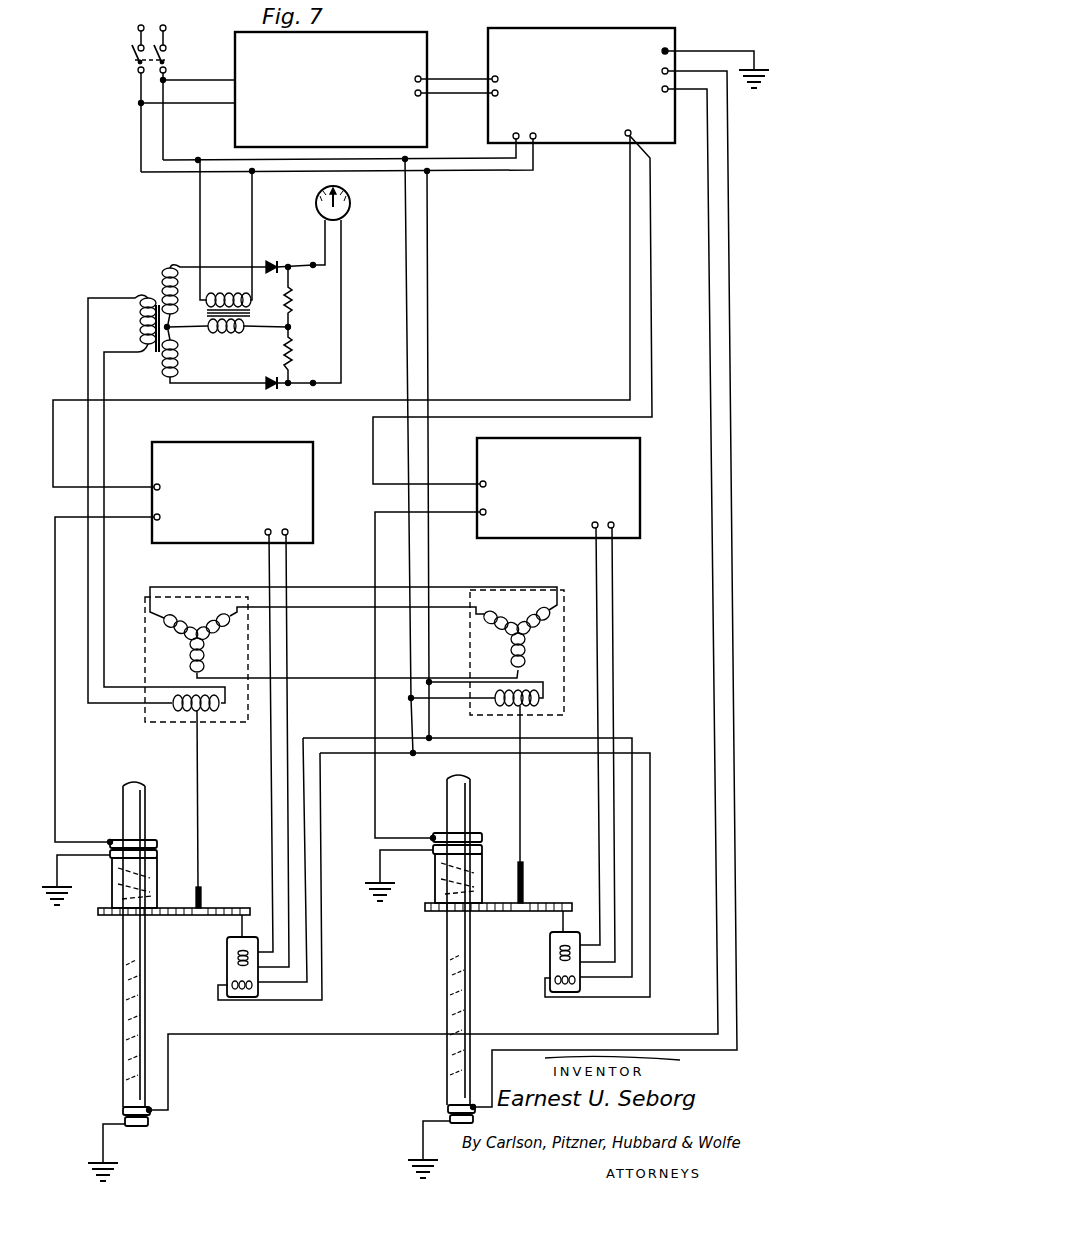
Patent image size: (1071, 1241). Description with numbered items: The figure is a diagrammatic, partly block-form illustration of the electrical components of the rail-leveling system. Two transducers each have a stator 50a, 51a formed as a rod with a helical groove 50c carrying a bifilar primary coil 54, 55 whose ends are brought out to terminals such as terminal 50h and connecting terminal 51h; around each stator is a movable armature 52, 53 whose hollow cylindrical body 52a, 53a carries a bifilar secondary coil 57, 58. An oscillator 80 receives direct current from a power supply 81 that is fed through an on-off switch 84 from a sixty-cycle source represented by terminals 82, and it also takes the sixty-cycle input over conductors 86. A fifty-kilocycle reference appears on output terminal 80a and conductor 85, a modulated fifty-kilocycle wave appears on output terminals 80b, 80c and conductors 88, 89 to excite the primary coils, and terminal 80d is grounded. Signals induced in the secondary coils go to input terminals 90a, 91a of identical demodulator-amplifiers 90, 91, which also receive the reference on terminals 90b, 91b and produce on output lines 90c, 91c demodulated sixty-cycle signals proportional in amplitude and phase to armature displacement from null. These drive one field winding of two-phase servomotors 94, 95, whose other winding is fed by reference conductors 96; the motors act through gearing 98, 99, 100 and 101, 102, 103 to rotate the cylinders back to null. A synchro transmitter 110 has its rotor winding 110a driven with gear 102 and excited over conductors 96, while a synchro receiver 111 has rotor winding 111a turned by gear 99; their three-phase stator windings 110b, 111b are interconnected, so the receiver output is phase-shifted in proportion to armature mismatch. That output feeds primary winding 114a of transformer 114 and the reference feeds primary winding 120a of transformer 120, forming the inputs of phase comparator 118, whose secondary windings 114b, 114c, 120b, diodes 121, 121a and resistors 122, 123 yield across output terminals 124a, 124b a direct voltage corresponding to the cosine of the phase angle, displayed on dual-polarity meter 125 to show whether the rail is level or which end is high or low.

The stator 50a is at (122, 1000).
The terminal 50h is at (152, 1113).
The helical groove 50c is at (152, 1130).
The stator 51a is at (446, 996).
The lower collar of second shaft 51h is at (442, 1142).
The armature 52 is at (160, 878).
The hollow cylindrical body 52a is at (113, 886).
The armature 53 is at (485, 874).
The rotatable cylinder 53a is at (436, 882).
The bifilar primary coil 54 is at (150, 1012).
The primary coil 55 is at (474, 1018).
The bifilar secondary coil 57 is at (155, 898).
The secondary coil 58 is at (482, 881).
The oscillator 80 is at (622, 34).
The output terminal 80a is at (626, 133).
The output terminal 80b is at (662, 89).
The output terminal 80c is at (662, 71).
The terminal 80d is at (697, 61).
The power supply 81 is at (392, 40).
The terminals 82 is at (137, 28).
The on-off switch 84 is at (170, 60).
The conductor 85 is at (628, 232).
The conductors 86 is at (498, 172).
The conductor 88 is at (709, 196).
The conductor 89 is at (729, 196).
The demodulator-amplifier 90 is at (257, 450).
The input terminal 90a is at (155, 521).
The terminal 90b is at (155, 484).
The output lines 90c is at (272, 569).
The demodulator-amplifier 91 is at (600, 446).
The input terminal 91a is at (481, 516).
The terminal 91b is at (480, 481).
The output lines 91c is at (600, 572).
The servomotor 94 is at (226, 944).
The servomotor 95 is at (549, 952).
The conductors 96 is at (427, 726).
The gearing 98 is at (237, 906).
The gear 99 is at (216, 917).
The gearing 100 is at (104, 916).
The gearing 101 is at (565, 903).
The gear 102 is at (542, 914).
The gearing 103 is at (432, 913).
The synchro transmitter 110 is at (565, 648).
The rotor winding 110a is at (525, 710).
The three-phase stator windings 110b is at (495, 630).
The synchro receiver 111 is at (142, 647).
The rotor winding 111a is at (215, 791).
The three-phase stator windings 111b is at (222, 632).
The transformer 114 is at (152, 270).
The primary winding 114a is at (140, 300).
The secondary winding 114b is at (212, 288).
The secondary winding 114c is at (178, 370).
The phase discriminator or comparator circuit 118 is at (180, 240).
The transformer 120 is at (240, 330).
The primary winding 120a is at (229, 239).
The secondary winding 120b is at (216, 334).
The diode 121 is at (270, 262).
The diode 121a is at (272, 390).
The resistor 122 is at (293, 302).
The resistor 123 is at (293, 352).
The output terminal 124a is at (300, 256).
The output terminal 124b is at (315, 386).
The dual polarity direct current meter 125 is at (346, 214).